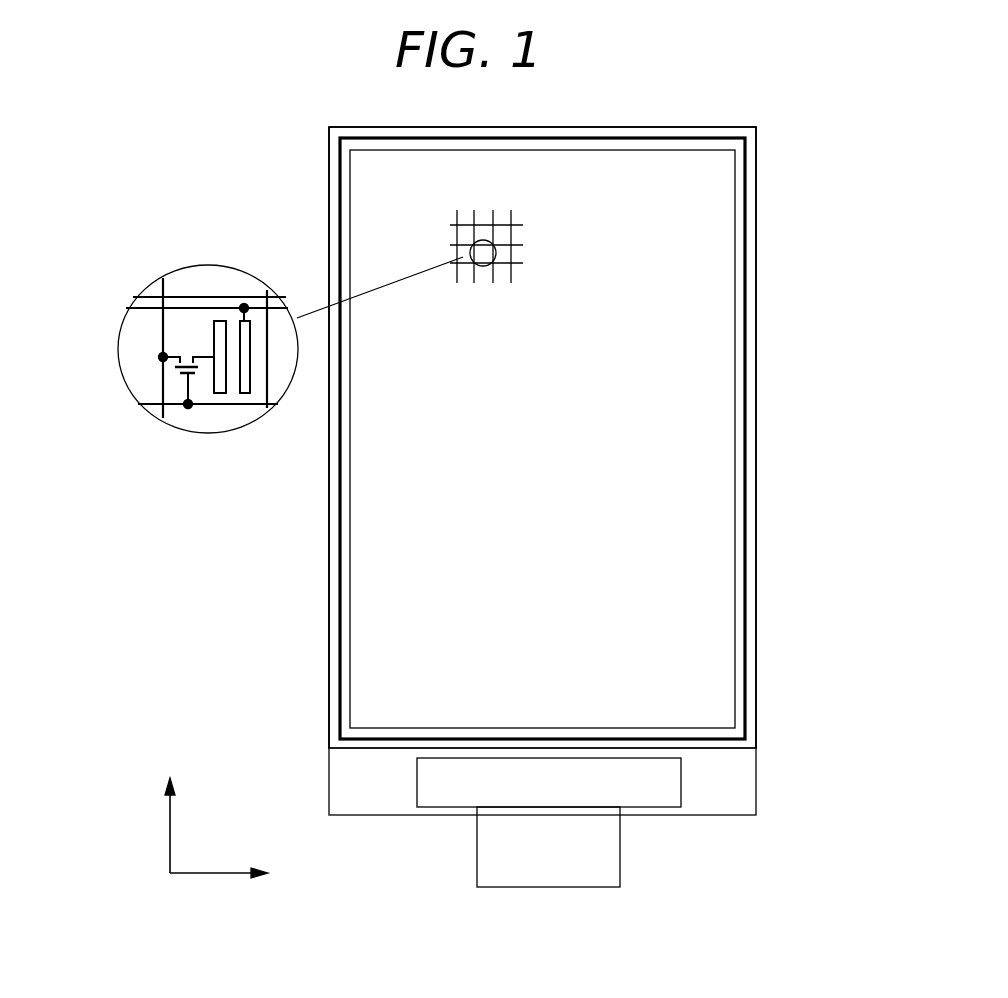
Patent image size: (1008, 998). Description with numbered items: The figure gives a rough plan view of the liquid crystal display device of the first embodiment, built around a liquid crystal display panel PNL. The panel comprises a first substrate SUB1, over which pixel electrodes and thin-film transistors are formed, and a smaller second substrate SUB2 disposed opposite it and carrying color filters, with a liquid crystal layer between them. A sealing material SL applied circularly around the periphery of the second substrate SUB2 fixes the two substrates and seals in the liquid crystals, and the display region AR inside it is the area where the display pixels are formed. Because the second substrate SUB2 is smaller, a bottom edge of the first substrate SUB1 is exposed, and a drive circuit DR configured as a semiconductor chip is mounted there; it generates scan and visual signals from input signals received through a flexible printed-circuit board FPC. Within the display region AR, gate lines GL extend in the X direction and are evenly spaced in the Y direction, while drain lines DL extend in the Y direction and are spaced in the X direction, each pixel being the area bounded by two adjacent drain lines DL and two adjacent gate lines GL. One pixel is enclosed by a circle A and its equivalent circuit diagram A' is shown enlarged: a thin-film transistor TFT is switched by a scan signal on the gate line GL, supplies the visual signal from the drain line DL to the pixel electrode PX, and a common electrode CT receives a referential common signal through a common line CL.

The liquid crystal display panel PNL is at (765, 213).
The display region AR is at (723, 360).
The sealing material SL is at (750, 507).
The second substrate SUB2 is at (757, 588).
The first substrate SUB1 is at (756, 787).
The drive circuit DR is at (435, 798).
The flexible printed-circuit board FPC is at (622, 847).
The drain line DL is at (512, 217).
The gate line GL is at (520, 263).
The common line CL is at (152, 306).
The thin-film transistor TFT is at (172, 373).
The pixel electrode PX is at (219, 393).
The common electrode CT is at (245, 393).
The circle A is at (483, 279).
The equivalent circuit diagram A' is at (265, 324).
The X direction X is at (230, 874).
The Y direction Y is at (170, 808).